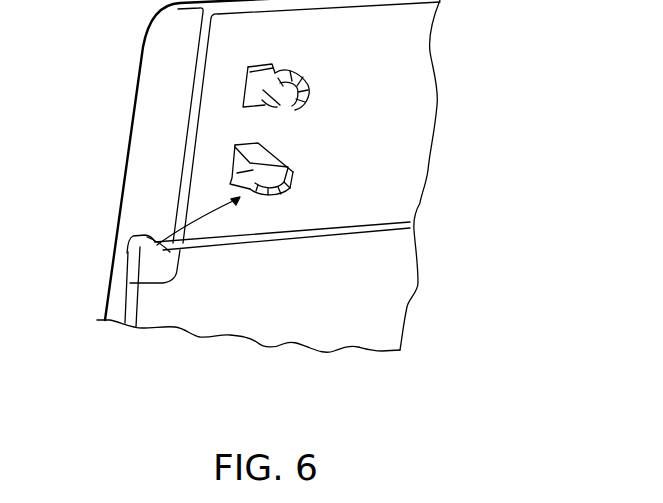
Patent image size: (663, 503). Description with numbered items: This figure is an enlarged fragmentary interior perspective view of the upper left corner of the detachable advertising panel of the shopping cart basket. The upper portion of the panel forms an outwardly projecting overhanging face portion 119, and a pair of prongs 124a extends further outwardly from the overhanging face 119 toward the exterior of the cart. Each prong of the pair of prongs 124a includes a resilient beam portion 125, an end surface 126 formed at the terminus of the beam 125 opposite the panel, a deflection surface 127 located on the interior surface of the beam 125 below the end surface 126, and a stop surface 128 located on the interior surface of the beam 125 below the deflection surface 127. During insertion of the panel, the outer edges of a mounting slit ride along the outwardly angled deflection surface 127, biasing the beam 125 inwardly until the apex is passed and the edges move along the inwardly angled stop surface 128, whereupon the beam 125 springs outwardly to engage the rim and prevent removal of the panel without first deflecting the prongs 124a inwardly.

The overhanging face portion 119 is at (108, 282).
The pair of prongs 124a is at (233, 174).
The resilient beam portion 125 is at (232, 178).
The end surface 126 is at (283, 197).
The deflection surface 127 is at (308, 80).
The stop surface 128 is at (137, 243).